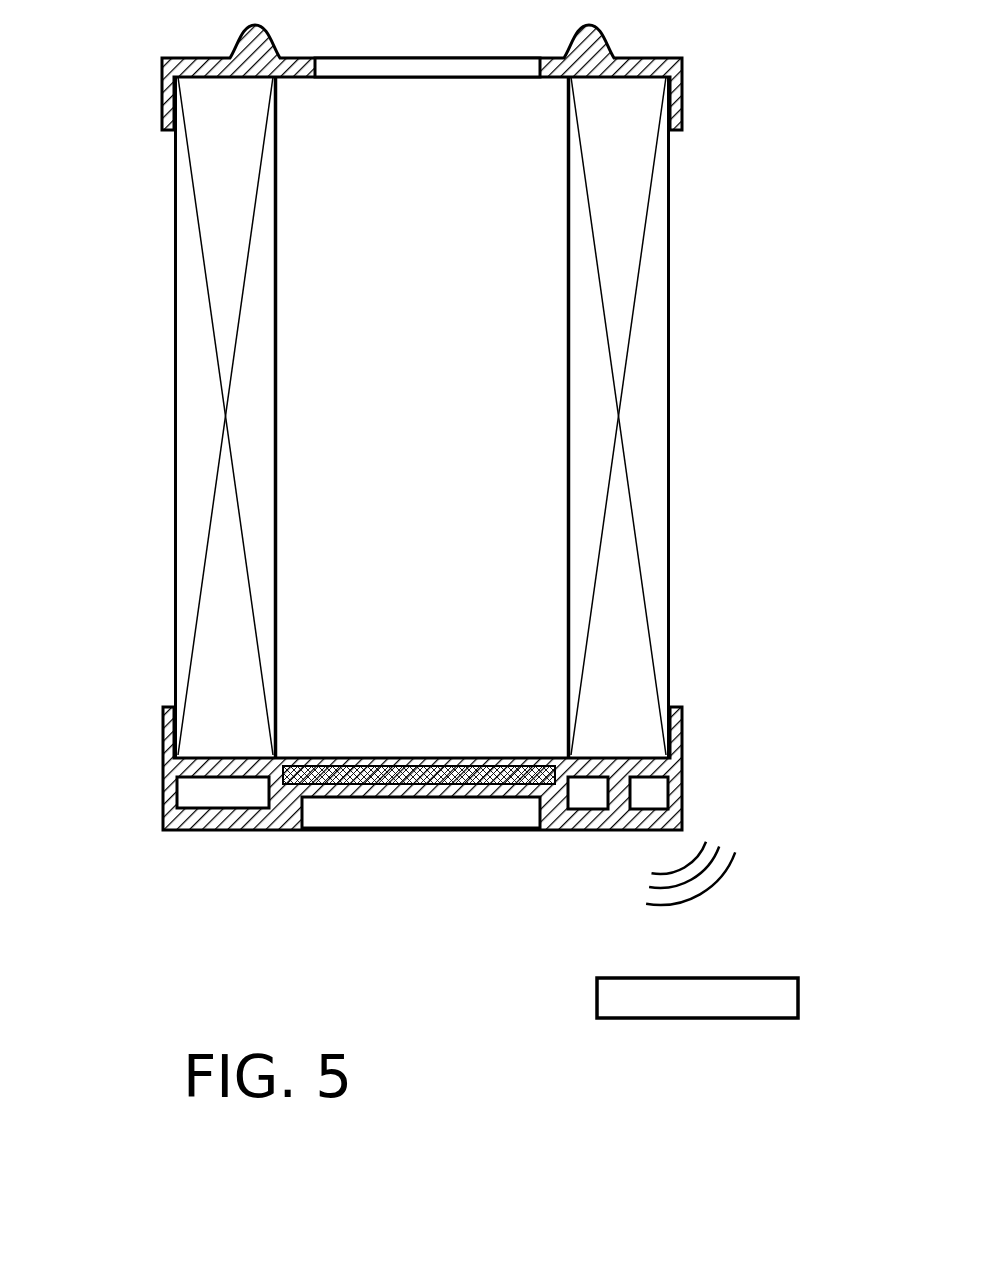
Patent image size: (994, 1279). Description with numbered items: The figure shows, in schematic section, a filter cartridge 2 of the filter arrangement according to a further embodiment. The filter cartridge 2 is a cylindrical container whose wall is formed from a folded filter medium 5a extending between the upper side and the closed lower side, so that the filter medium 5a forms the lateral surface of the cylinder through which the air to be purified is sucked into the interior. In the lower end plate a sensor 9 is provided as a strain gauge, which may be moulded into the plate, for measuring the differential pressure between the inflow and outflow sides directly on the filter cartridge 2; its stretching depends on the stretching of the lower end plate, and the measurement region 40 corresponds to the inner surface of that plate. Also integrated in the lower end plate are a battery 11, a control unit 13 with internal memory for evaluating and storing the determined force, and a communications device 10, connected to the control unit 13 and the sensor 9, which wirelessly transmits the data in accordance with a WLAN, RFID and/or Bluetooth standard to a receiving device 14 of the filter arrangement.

The filter cartridge 2 is at (728, 190).
The filter medium 5a is at (648, 318).
The measurement region 40 is at (317, 753).
The battery 11 is at (250, 802).
The sensor 9 is at (497, 797).
The control unit 13 is at (583, 797).
The communications device 10 is at (647, 798).
The receiving device 14 is at (692, 1005).